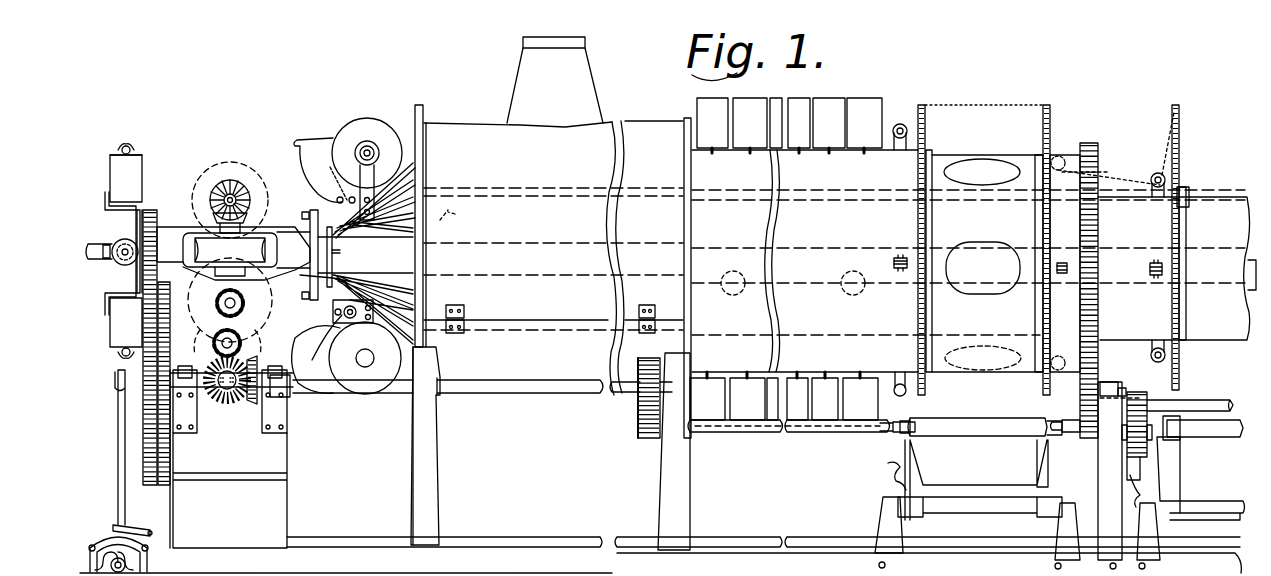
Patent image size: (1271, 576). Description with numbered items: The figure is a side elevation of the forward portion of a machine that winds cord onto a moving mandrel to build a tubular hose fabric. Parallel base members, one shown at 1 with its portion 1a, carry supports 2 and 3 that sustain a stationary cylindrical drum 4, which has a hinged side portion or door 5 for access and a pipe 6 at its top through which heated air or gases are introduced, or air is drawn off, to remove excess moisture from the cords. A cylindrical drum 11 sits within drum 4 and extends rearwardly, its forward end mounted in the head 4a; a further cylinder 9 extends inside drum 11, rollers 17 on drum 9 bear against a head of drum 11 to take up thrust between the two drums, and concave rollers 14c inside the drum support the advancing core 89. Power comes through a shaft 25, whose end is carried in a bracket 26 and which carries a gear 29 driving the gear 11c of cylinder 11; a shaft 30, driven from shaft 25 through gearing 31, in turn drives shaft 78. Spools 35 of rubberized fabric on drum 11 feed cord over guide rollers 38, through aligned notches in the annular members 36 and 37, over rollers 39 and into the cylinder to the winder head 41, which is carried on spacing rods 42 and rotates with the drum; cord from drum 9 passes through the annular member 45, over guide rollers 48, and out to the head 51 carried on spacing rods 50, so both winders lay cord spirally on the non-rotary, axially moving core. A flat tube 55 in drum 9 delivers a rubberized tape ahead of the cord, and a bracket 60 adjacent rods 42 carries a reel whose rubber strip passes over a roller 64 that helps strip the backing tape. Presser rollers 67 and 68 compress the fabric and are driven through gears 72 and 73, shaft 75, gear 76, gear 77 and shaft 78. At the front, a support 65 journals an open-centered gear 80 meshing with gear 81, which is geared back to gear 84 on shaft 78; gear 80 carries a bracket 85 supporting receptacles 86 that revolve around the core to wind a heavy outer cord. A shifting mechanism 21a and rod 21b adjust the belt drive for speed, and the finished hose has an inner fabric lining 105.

The base member 1 is at (660, 562).
The pedestal 1a is at (1167, 532).
The support 2 is at (448, 470).
The support 3 is at (663, 458).
The cylindrical drum 4 is at (647, 133).
The head of the drum 4a is at (419, 113).
The hinged side portion or door 5 is at (505, 282).
The pipe 6 is at (586, 45).
The cylinder 9 is at (1177, 263).
The cylindrical drum 11 is at (1072, 152).
The gear 11c is at (1101, 278).
The rollers 14c is at (793, 295).
The roller 17 is at (1058, 178).
The shifting mechanism 21a is at (118, 465).
The rod 21b is at (574, 528).
The shaft 25 is at (1200, 408).
The support or bracket 26 is at (1112, 471).
The gear 29 is at (1090, 392).
The shaft 30 is at (851, 433).
The gearing 31 is at (1125, 425).
The spool of rubberized fabric 35 is at (905, 136).
The annular member 36 is at (925, 108).
The annular member 37 is at (1047, 108).
The guide roller 38 is at (901, 123).
The roller 39 is at (1060, 156).
The head (winder) 41 is at (312, 210).
The spacing rods 42 is at (402, 322).
The annular member 45 is at (1179, 108).
The guide roller 48 is at (1156, 179).
The spacing rods or supports 50 is at (399, 280).
The head (winder) 51 is at (335, 258).
The flat tube 55 is at (404, 245).
The bracket 60 is at (124, 265).
The roller 64 is at (352, 320).
The support 65 is at (230, 490).
The roller 67 is at (228, 175).
The roller 68 is at (262, 238).
The gear 72 is at (216, 302).
The gear 73 is at (212, 345).
The shaft 75 is at (229, 391).
The gear 76 is at (220, 400).
The gear 77 is at (258, 364).
The shaft 78 is at (397, 395).
The gear 80 is at (151, 210).
The gear 81 is at (152, 459).
The gear 84 is at (165, 482).
The bracket 85 is at (112, 253).
The receptacles 86 is at (137, 153).
The core (mandrel) 89 is at (310, 238).
The inner fabric lining 105 is at (986, 425).